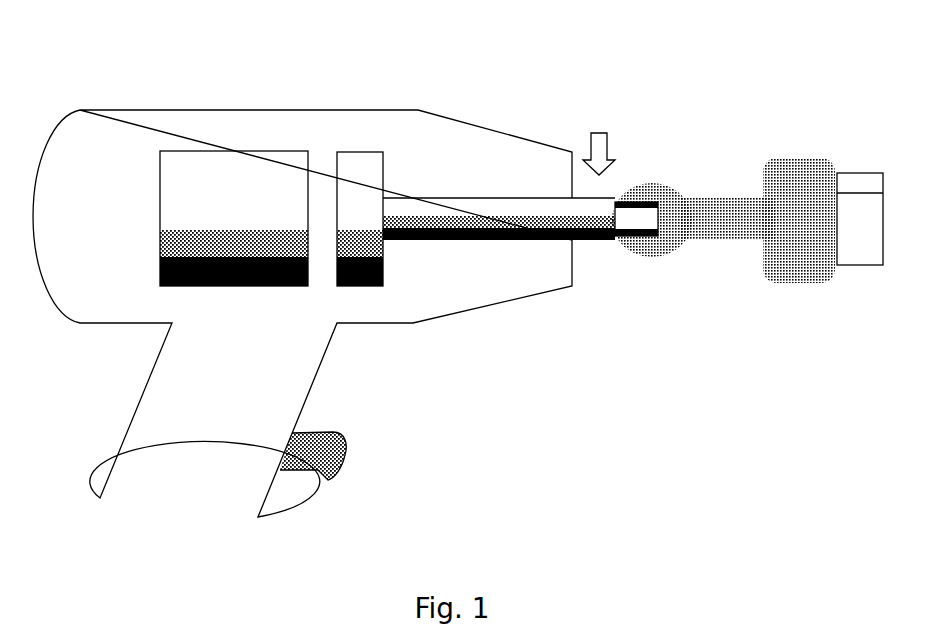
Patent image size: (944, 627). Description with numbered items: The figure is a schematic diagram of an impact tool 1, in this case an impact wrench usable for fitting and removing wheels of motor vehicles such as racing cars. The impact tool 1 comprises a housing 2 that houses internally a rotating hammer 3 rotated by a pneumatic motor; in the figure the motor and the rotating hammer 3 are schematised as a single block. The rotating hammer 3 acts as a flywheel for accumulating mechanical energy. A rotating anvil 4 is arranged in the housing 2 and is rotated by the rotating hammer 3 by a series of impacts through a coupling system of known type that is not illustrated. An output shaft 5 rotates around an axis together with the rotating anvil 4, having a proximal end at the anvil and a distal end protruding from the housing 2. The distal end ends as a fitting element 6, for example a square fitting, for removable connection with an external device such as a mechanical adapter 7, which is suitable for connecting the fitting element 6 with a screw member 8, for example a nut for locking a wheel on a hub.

The impact tool 1 is at (458, 265).
The housing 2 is at (97, 302).
The rotating hammer 3 is at (238, 173).
The rotating anvil 4 is at (362, 165).
The output shaft 5 is at (497, 210).
The fitting element 6 is at (636, 222).
The mechanical adapter 7 is at (723, 215).
The screw member 8 is at (860, 258).